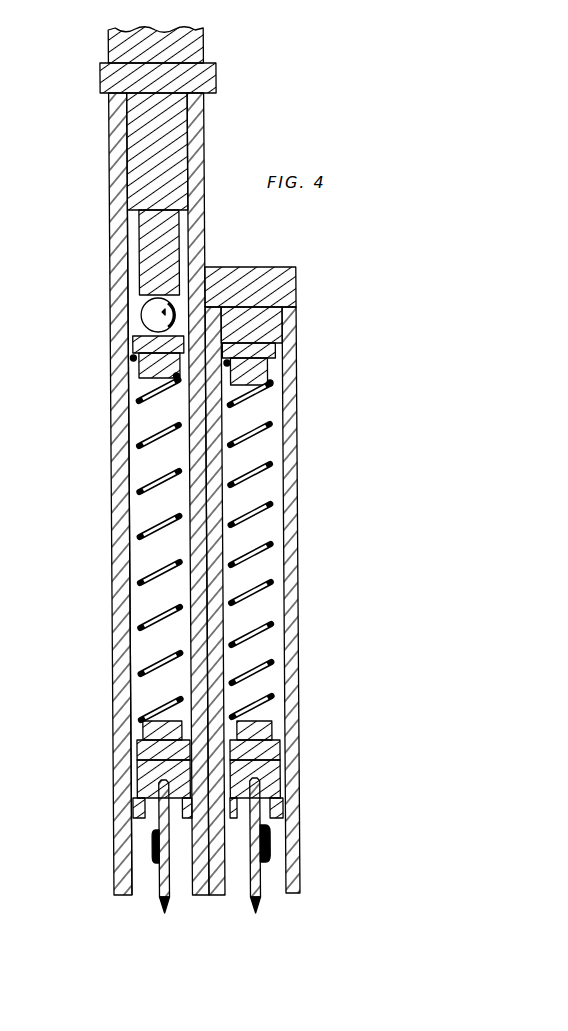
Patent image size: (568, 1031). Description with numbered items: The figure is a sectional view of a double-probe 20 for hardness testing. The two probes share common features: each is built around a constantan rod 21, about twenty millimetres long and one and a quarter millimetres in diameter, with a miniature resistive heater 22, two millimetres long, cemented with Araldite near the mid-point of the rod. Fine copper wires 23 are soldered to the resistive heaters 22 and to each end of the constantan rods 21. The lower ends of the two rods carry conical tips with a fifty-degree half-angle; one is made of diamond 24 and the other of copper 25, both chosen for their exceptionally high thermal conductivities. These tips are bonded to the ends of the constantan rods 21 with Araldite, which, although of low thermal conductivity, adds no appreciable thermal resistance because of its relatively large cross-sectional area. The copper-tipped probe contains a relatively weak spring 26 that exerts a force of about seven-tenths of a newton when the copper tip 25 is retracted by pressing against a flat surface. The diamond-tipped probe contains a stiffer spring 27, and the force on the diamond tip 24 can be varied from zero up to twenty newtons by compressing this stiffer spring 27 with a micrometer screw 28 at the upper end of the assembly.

The double-probe 20 is at (319, 369).
The constantan rod 21 is at (250, 887).
The resistive heater 22 is at (146, 866).
The copper wire 23 is at (155, 821).
The diamond tip 24 is at (162, 910).
The copper tip 25 is at (262, 906).
The spring 26 is at (270, 542).
The stiffer spring 27 is at (137, 537).
The micrometer screw 28 is at (193, 50).